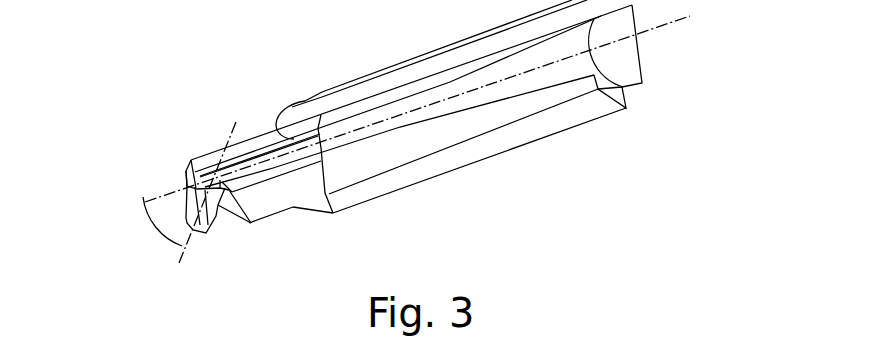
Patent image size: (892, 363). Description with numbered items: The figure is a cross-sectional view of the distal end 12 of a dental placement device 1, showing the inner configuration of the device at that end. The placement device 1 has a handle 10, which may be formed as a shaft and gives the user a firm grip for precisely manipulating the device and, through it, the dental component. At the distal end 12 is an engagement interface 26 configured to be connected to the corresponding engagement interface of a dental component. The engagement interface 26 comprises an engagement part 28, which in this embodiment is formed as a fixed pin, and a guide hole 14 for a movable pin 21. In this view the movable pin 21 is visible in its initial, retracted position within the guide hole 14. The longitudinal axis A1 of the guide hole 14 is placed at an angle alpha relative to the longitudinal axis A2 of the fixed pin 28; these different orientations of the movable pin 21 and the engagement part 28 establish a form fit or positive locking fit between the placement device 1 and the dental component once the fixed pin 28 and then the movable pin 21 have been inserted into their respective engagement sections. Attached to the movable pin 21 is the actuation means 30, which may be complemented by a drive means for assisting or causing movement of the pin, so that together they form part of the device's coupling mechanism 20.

The placement device 1 is at (602, 138).
The handle 10 is at (520, 147).
The distal end 12 is at (197, 137).
The guide hole 14 is at (186, 169).
The coupling mechanism 20 is at (237, 156).
The movable pin 21 is at (290, 141).
The engagement interface 26 is at (180, 190).
The engagement part 28 is at (204, 233).
The actuation means 30 is at (640, 53).
The longitudinal axis of the guide hole A1 is at (186, 193).
The longitudinal axis of the fixed pin A2 is at (180, 252).